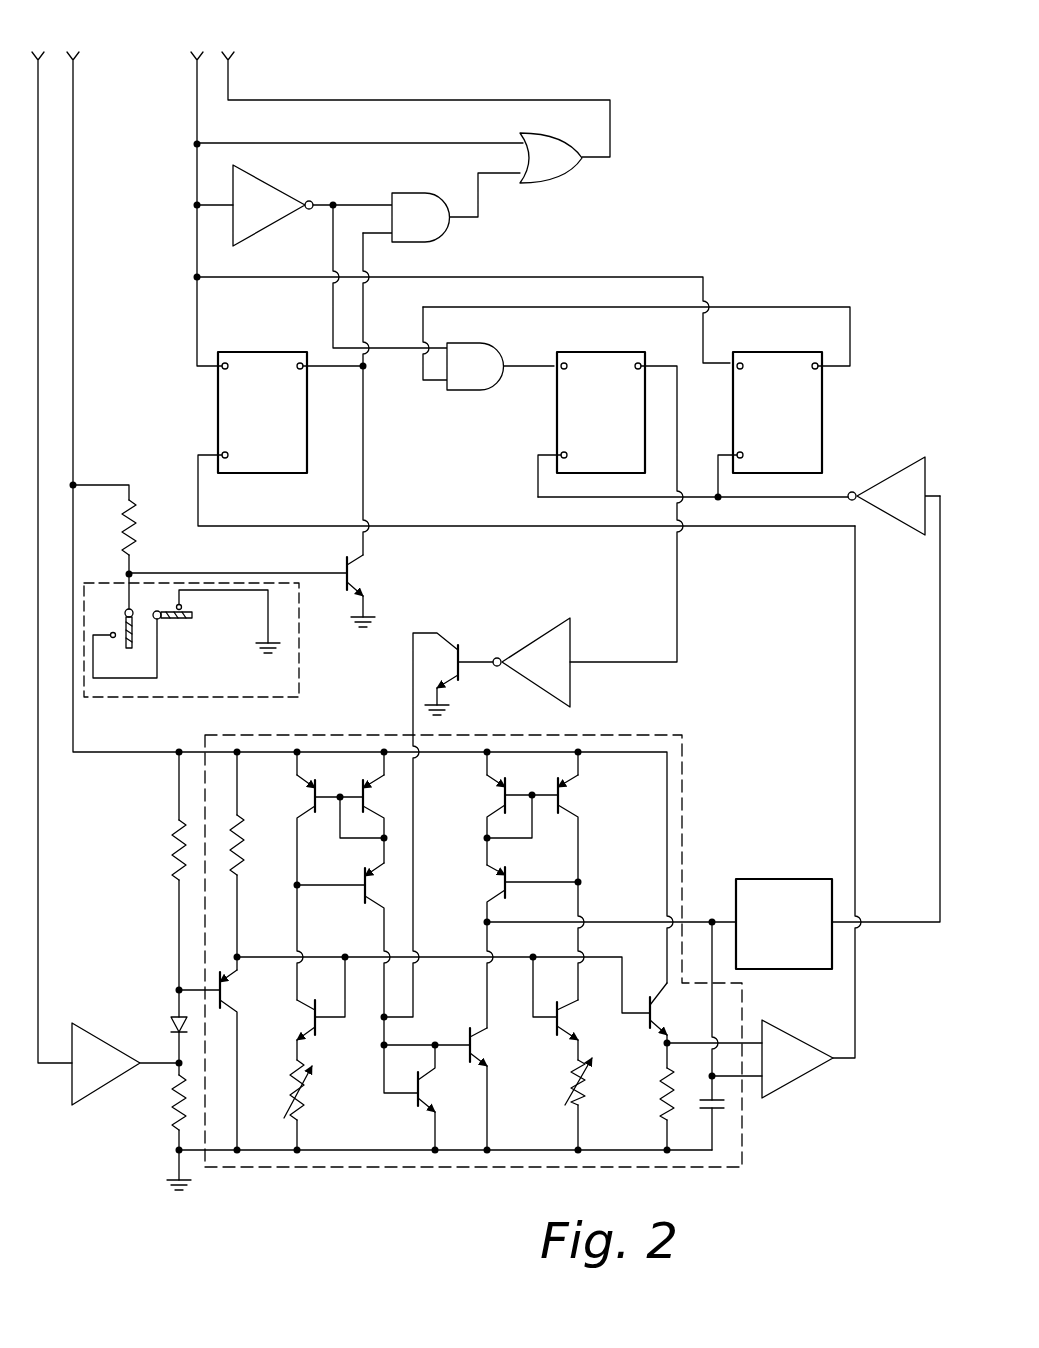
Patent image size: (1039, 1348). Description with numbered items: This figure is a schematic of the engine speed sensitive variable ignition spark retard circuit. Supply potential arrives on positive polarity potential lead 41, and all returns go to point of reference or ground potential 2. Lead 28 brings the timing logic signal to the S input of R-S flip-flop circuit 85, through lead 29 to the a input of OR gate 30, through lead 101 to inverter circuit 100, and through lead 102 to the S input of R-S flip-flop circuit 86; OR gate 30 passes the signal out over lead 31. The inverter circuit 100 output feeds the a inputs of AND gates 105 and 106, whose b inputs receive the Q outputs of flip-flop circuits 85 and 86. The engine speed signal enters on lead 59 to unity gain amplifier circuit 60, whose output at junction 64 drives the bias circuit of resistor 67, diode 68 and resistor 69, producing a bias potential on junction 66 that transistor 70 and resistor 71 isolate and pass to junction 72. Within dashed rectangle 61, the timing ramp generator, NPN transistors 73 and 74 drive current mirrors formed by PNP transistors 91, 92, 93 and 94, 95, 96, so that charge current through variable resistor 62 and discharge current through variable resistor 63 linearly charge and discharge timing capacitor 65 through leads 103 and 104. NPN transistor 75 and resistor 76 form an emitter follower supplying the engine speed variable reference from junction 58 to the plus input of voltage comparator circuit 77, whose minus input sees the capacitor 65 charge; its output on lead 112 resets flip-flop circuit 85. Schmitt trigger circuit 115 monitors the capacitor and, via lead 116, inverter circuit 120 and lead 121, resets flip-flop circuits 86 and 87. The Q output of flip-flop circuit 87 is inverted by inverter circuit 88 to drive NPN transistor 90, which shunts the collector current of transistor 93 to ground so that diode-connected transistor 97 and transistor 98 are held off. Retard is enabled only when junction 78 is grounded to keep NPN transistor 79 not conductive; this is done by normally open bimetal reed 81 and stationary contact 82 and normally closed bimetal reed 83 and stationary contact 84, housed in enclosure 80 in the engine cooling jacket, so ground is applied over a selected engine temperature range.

The point of reference or ground potential 2 is at (372, 617).
The lead 28 is at (199, 58).
The lead 29 is at (382, 143).
The OR gate 30 is at (546, 140).
The lead 31 is at (230, 58).
The positive polarity potential lead 41 is at (75, 58).
The junction 58 is at (668, 1045).
The lead 59 is at (40, 58).
The unity gain amplifier circuit 60 is at (100, 1037).
The dashed rectangle 61 is at (278, 1170).
The variable resistor 62 is at (582, 1097).
The variable resistor 63 is at (294, 1088).
The junction 64 is at (176, 1066).
The timing capacitor 65 is at (722, 1112).
The junction 66 is at (178, 990).
The resistor 67 is at (175, 848).
The diode 68 is at (174, 1024).
The resistor 69 is at (176, 1110).
The transistor 70 is at (226, 1000).
The resistor 71 is at (240, 845).
The junction 72 is at (240, 957).
The NPN transistor 73 is at (305, 1018).
The NPN transistor 74 is at (555, 1028).
The NPN transistor 75 is at (647, 1012).
The resistor 76 is at (664, 1090).
The voltage comparator circuit 77 is at (792, 1040).
The junction 78 is at (132, 573).
The NPN transistor 79 is at (345, 568).
The enclosure 80 is at (302, 690).
The bimetal reed 81 is at (127, 645).
The stationary contact 82 is at (113, 632).
The bimetal reed 83 is at (158, 620).
The stationary contact 84 is at (183, 607).
The R-S flip-flop circuit 85 is at (292, 442).
The R-S flip-flop circuit 86 is at (818, 455).
The R-S flip-flop circuit 87 is at (565, 372).
The inverter circuit 88 is at (565, 645).
The NPN transistor 90 is at (462, 655).
The PNP transistor 91 is at (308, 790).
The PNP transistor 92 is at (361, 794).
The PNP transistor 93 is at (364, 885).
The PNP transistor 94 is at (502, 795).
The PNP transistor 95 is at (563, 797).
The PNP transistor 96 is at (502, 882).
The NPN transistor connected as a diode 97 is at (414, 1093).
The NPN transistor 98 is at (470, 1030).
The inverter circuit 100 is at (276, 192).
The lead 101 is at (215, 207).
The lead 102 is at (262, 277).
The lead 103 is at (522, 922).
The lead 104 is at (714, 980).
The AND gate 105 is at (438, 232).
The AND gate 106 is at (484, 392).
The lead 112 is at (856, 1005).
The Schmitt trigger circuit 115 is at (765, 885).
The lead 116 is at (938, 772).
The inverter circuit 120 is at (900, 478).
The lead 121 is at (762, 498).